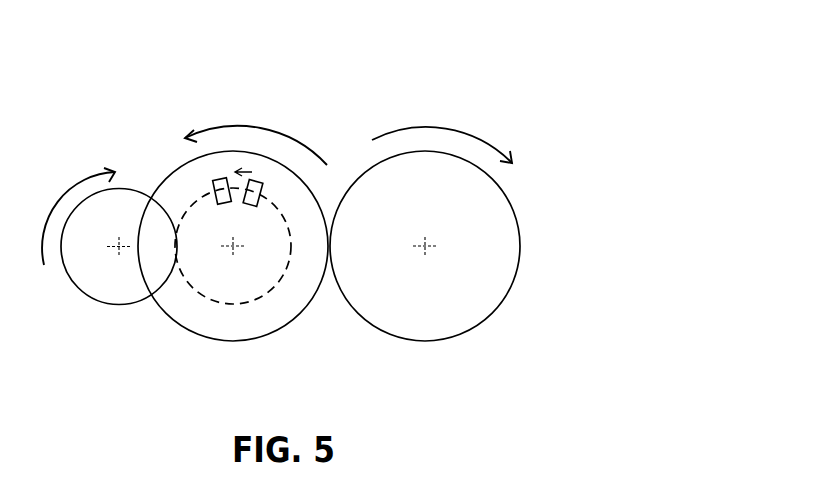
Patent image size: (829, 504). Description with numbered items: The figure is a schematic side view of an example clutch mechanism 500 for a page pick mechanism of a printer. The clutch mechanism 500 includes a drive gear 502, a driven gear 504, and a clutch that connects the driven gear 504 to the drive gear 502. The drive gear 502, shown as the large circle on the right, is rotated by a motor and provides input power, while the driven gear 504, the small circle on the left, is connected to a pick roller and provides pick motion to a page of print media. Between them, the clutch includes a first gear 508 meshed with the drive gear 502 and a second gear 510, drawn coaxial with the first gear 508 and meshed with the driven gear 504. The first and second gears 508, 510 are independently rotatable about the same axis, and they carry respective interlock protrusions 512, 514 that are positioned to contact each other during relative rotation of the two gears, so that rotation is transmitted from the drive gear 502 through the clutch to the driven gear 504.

The clutch mechanism 500 is at (382, 75).
The drive gear 502 is at (512, 207).
The driven gear 504 is at (110, 303).
The first gear 508 is at (287, 328).
The second gear 510 is at (235, 303).
The interlock protrusion 512 is at (262, 182).
The interlock protrusion 514 is at (216, 183).